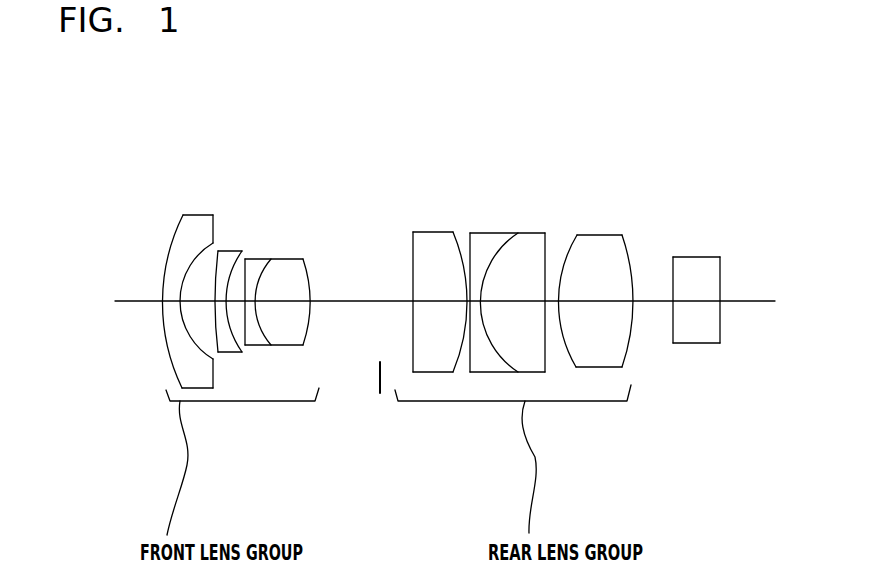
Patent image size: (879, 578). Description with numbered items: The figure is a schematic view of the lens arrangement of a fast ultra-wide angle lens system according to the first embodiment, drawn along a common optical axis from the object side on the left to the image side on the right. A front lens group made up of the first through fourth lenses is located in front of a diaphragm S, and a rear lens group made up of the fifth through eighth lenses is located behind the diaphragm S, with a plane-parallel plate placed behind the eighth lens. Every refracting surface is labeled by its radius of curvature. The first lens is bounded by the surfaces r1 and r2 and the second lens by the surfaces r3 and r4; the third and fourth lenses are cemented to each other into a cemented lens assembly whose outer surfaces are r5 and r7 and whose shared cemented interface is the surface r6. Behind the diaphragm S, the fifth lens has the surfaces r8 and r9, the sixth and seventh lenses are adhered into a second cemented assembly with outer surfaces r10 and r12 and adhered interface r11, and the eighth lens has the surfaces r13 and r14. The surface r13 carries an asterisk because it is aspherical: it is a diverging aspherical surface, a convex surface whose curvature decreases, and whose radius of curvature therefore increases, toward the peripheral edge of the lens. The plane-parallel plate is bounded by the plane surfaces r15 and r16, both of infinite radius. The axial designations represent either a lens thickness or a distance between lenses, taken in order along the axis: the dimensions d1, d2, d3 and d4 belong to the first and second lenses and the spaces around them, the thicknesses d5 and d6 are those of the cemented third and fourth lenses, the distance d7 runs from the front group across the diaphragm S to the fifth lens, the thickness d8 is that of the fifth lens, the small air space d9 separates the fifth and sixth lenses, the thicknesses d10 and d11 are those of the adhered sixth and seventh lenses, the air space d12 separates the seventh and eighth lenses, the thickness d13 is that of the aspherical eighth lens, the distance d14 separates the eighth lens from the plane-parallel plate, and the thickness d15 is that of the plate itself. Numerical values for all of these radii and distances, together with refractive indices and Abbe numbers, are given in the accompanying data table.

The radius of curvature of first lens surface r1 is at (183, 215).
The radius of curvature of second lens surface r2 is at (192, 226).
The radius of curvature of third lens surface r3 is at (218, 251).
The radius of curvature of fourth lens surface r4 is at (243, 251).
The radius of curvature of fifth lens surface r5 is at (245, 259).
The radius of curvature of sixth lens surface r6 is at (291, 205).
The radius of curvature of seventh lens surface r7 is at (303, 259).
The radius of curvature of eighth lens surface r8 is at (390, 218).
The radius of curvature of ninth lens surface r9 is at (453, 232).
The radius of curvature of tenth lens surface r10 is at (462, 218).
The radius of curvature of eleventh lens surface r11 is at (518, 233).
The radius of curvature of twelfth lens surface r12 is at (545, 233).
The radius of curvature of thirteenth lens surface r13 is at (577, 235).
The radius of curvature of fourteenth lens surface r14 is at (622, 235).
The radius of curvature of fifteenth lens surface r15 is at (673, 257).
The radius of curvature of sixteenth lens surface r16 is at (720, 257).
The lens thickness d1 is at (172, 301).
The lens thickness or distance between lenses d2 is at (200, 301).
The lens thickness or distance between lenses d3 is at (230, 301).
The distance between lenses d4 is at (265, 418).
The lens thickness d5 is at (285, 406).
The lens thickness d6 is at (313, 418).
The distance between lenses d7 is at (362, 301).
The lens thickness d8 is at (413, 417).
The distance between lenses d9 is at (444, 405).
The lens thickness d10 is at (461, 301).
The lens thickness d11 is at (509, 301).
The distance between lenses d12 is at (553, 301).
The lens thickness d13 is at (600, 301).
The distance between lenses d14 is at (648, 301).
The lens thickness d15 is at (695, 301).
The diaphragm S is at (368, 291).